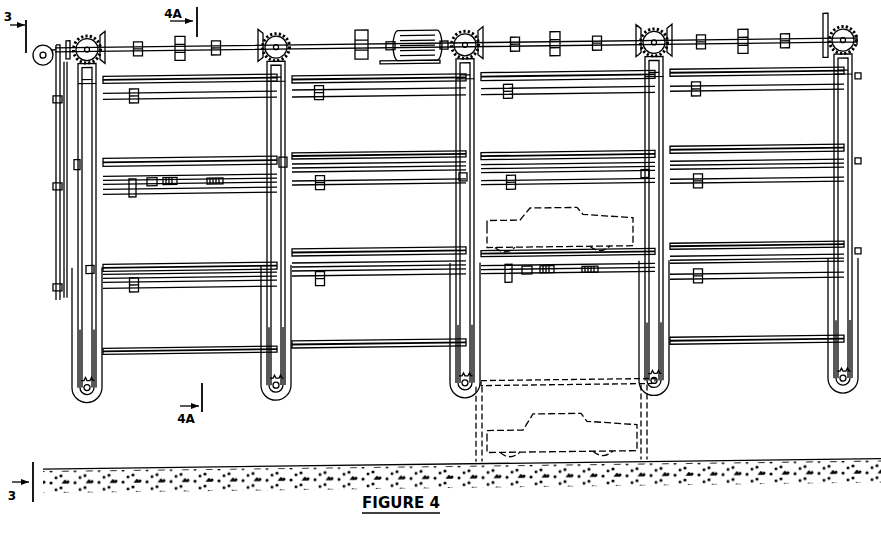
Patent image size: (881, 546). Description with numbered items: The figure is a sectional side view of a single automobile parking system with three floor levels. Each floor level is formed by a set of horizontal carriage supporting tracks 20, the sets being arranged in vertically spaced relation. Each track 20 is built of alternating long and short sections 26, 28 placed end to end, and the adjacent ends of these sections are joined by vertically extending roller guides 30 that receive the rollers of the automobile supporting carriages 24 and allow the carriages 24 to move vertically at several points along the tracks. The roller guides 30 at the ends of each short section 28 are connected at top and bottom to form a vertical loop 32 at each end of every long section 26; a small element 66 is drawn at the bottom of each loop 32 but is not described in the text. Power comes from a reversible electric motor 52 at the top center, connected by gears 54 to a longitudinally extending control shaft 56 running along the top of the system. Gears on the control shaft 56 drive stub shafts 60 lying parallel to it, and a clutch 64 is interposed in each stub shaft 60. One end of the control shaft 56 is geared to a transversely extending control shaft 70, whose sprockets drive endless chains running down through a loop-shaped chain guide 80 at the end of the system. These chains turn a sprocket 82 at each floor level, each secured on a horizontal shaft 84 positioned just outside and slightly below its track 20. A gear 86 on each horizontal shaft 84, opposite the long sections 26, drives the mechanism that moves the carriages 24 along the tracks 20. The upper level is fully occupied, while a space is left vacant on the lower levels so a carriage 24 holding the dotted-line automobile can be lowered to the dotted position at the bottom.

The horizontal carriage supporting tracks 20 is at (230, 82).
The automobile supporting carriage 24 is at (123, 157).
The long track section 26 is at (200, 173).
The short track section 28 is at (77, 168).
The roller guide 30 is at (76, 218).
The loop 32 is at (54, 288).
The reversible electric motor 52 is at (399, 40).
The gears 54 is at (358, 37).
The control shaft 56 is at (313, 48).
The stub shaft 60 is at (683, 37).
The clutch 64 is at (591, 37).
The idler sheave 66 is at (83, 389).
The transversely extending control shaft 70 is at (44, 46).
The loop-shaped chain guide 80 is at (57, 135).
The sprocket 82 is at (54, 97).
The horizontal shaft 84 is at (56, 95).
The gear 86 is at (133, 195).